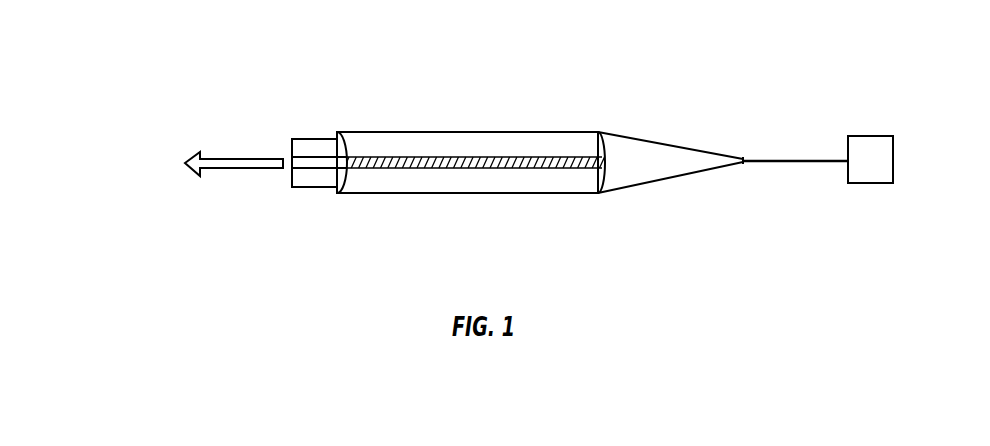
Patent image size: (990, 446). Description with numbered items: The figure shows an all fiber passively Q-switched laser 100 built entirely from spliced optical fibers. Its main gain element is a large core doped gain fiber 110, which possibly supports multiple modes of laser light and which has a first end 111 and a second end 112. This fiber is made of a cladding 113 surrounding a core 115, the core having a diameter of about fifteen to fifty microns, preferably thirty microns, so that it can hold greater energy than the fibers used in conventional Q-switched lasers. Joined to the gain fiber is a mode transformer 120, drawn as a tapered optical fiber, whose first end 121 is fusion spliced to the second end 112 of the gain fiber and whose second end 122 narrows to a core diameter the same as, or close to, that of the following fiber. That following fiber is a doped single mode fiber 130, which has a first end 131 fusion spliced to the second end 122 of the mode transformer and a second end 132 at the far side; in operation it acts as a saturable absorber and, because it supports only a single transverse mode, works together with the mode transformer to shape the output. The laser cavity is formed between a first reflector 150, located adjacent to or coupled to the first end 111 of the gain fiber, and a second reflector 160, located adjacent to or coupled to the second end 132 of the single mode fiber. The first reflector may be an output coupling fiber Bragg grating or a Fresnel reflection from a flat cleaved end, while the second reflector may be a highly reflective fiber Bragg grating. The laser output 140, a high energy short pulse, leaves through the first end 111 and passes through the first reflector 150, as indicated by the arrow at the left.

The all fiber passively Q-switched laser 100 is at (530, 100).
The large core doped gain fiber 110 is at (397, 132).
The first end 111 is at (346, 170).
The second end 112 is at (606, 170).
The cladding 113 is at (490, 132).
The core 115 is at (523, 168).
The mode transformer 120 is at (692, 116).
The first end 121 is at (604, 132).
The second end 122 is at (727, 152).
The doped single mode fiber 130 is at (806, 160).
The first end 131 is at (745, 164).
The second end 132 is at (840, 163).
The laser output 140 is at (252, 168).
The first reflector 150 is at (317, 187).
The second reflector 160 is at (882, 183).